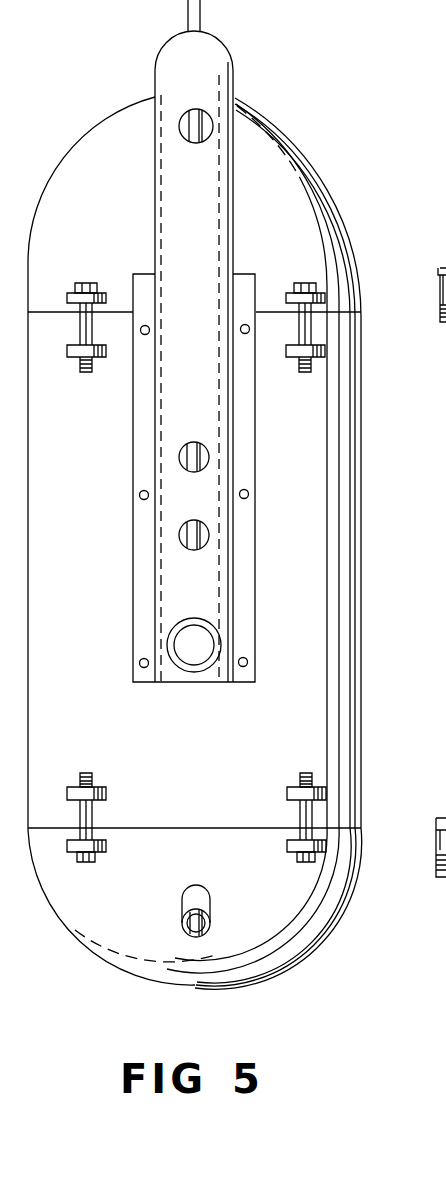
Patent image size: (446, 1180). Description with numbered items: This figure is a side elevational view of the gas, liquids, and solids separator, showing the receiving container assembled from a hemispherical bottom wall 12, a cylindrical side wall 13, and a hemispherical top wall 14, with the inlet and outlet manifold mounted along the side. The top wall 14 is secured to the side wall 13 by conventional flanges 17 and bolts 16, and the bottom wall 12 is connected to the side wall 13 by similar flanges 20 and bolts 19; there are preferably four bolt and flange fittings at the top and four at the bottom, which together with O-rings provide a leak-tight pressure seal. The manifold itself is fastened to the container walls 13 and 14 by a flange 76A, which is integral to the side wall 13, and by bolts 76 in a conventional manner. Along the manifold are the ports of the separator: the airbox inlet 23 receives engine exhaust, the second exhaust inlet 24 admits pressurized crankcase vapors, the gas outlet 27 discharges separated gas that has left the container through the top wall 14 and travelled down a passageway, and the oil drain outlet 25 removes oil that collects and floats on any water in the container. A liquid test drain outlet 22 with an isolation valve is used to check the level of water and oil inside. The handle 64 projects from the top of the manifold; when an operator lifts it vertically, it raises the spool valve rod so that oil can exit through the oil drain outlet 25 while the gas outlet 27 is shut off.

The hemispherical bottom wall 12 is at (325, 912).
The cylindrical side wall 13 is at (352, 612).
The hemispherical top wall 14 is at (358, 258).
The bolts 16 is at (78, 332).
The flanges 17 is at (77, 292).
The bolts 19 is at (92, 815).
The flanges 20 is at (95, 787).
The liquid test drain outlet 22 is at (211, 920).
The airbox inlet 23 is at (183, 541).
The second exhaust inlet 24 is at (207, 450).
The oil drain outlet 25 is at (193, 662).
The gas outlet 27 is at (212, 135).
The handle 64 is at (201, 13).
The bolts 76 is at (240, 329).
The flange 76A is at (133, 545).